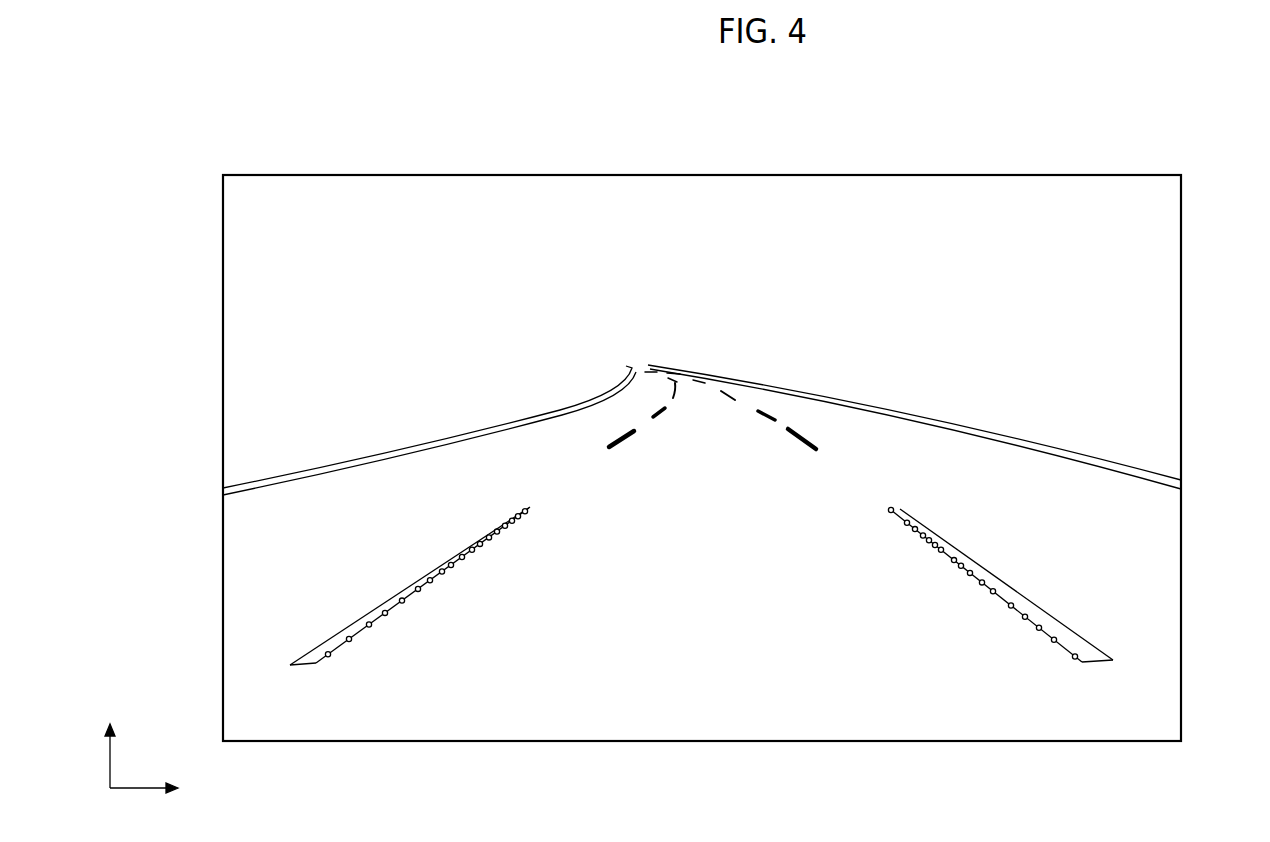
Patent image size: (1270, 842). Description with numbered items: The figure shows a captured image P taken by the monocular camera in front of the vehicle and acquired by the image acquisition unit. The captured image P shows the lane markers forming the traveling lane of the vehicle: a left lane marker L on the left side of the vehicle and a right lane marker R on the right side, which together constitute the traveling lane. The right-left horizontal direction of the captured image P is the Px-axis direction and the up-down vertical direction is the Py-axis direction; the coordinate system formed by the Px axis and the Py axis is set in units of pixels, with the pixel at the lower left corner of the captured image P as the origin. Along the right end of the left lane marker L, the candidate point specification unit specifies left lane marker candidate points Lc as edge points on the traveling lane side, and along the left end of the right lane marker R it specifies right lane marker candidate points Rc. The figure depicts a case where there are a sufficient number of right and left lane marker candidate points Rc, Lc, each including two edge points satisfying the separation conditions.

The captured image P is at (1181, 238).
The left lane marker L is at (479, 523).
The left lane marker candidate points Lc is at (352, 641).
The right lane marker R is at (947, 523).
The right lane marker candidate points Rc is at (1036, 625).
The Px axis Px is at (162, 790).
The Py axis Py is at (112, 739).